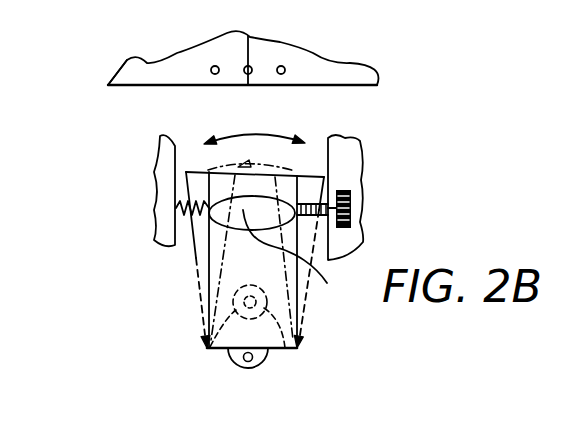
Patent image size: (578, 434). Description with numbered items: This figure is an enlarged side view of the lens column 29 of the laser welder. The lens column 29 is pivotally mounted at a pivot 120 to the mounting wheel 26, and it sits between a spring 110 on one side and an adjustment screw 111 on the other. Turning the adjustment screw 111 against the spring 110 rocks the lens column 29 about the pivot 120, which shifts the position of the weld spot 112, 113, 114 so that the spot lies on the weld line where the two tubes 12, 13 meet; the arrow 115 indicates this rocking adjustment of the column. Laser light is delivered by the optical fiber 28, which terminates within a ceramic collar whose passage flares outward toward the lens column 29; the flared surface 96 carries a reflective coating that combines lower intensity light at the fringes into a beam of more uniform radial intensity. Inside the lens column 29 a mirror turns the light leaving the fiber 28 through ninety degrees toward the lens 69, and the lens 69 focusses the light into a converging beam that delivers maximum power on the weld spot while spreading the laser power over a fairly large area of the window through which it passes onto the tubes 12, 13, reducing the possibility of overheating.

The tube 12 is at (347, 70).
The tube 13 is at (128, 71).
The weld spot 112 is at (211, 71).
The weld spot 113 is at (251, 73).
The weld spot 114 is at (284, 73).
The oscillation arrow 115 is at (245, 134).
The mounting wheel 26 is at (178, 153).
The spring 110 is at (178, 218).
The adjustment screw 111 is at (351, 207).
The lens column 29 is at (200, 283).
The lens 69 is at (294, 264).
The optical fiber 28 is at (206, 349).
The flared surface 96 is at (287, 350).
The pivot 120 is at (241, 368).